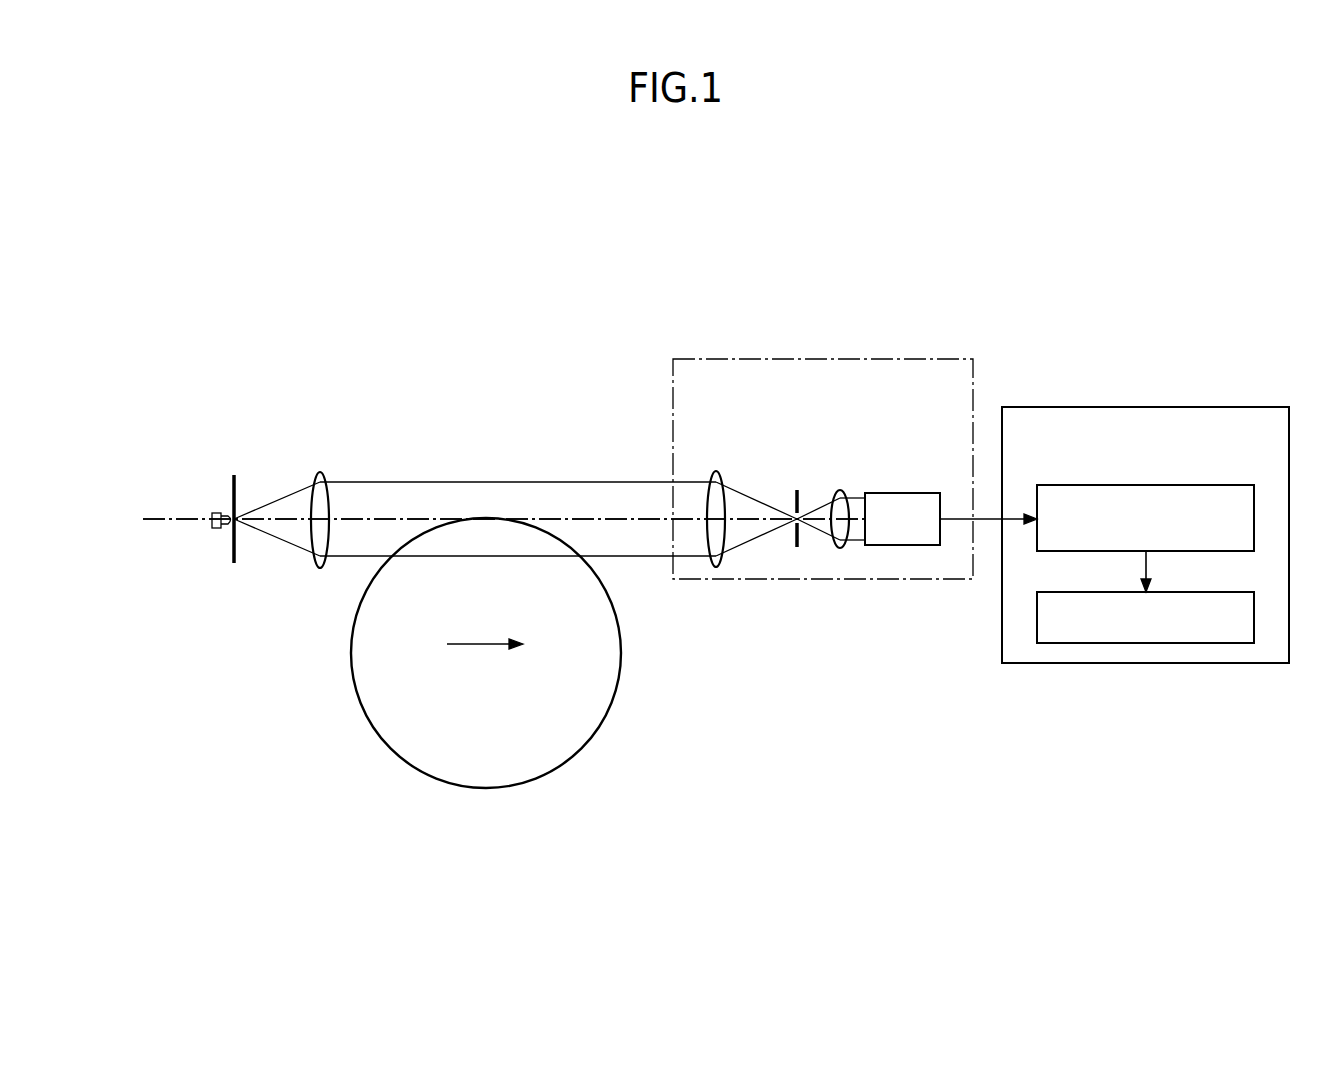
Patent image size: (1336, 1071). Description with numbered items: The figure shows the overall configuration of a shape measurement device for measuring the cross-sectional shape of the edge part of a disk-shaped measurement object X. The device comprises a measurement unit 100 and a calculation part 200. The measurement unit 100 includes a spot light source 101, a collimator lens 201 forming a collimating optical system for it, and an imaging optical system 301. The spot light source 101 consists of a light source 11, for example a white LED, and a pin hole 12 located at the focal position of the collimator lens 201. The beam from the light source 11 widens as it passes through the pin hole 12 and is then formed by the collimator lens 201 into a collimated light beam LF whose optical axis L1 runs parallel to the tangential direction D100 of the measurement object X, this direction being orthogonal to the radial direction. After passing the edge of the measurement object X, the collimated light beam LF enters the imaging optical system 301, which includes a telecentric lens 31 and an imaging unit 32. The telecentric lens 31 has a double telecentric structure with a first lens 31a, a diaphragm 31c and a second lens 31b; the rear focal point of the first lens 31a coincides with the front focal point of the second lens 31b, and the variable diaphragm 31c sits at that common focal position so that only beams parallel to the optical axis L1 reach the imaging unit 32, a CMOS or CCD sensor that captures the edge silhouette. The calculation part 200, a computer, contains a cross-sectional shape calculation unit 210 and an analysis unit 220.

The measurement unit 100 is at (603, 320).
The spot light source 101 is at (288, 413).
The light source 11 is at (228, 511).
The pin hole 12 is at (240, 487).
The collimator lens 201 is at (323, 472).
The collimated light beam LF is at (390, 480).
The optical axis L1 is at (418, 517).
The imaging optical system 301 is at (908, 359).
The telecentric lens 31 is at (695, 413).
The first lens 31a is at (715, 471).
The second lens 31b is at (841, 489).
The diaphragm 31c is at (797, 489).
The imaging unit 32 is at (913, 492).
The calculation part 200 is at (1232, 406).
The cross-sectional shape calculation unit 210 is at (1204, 484).
The analysis unit 220 is at (1204, 592).
The measurement object X is at (621, 665).
The tangential direction D100 is at (485, 670).